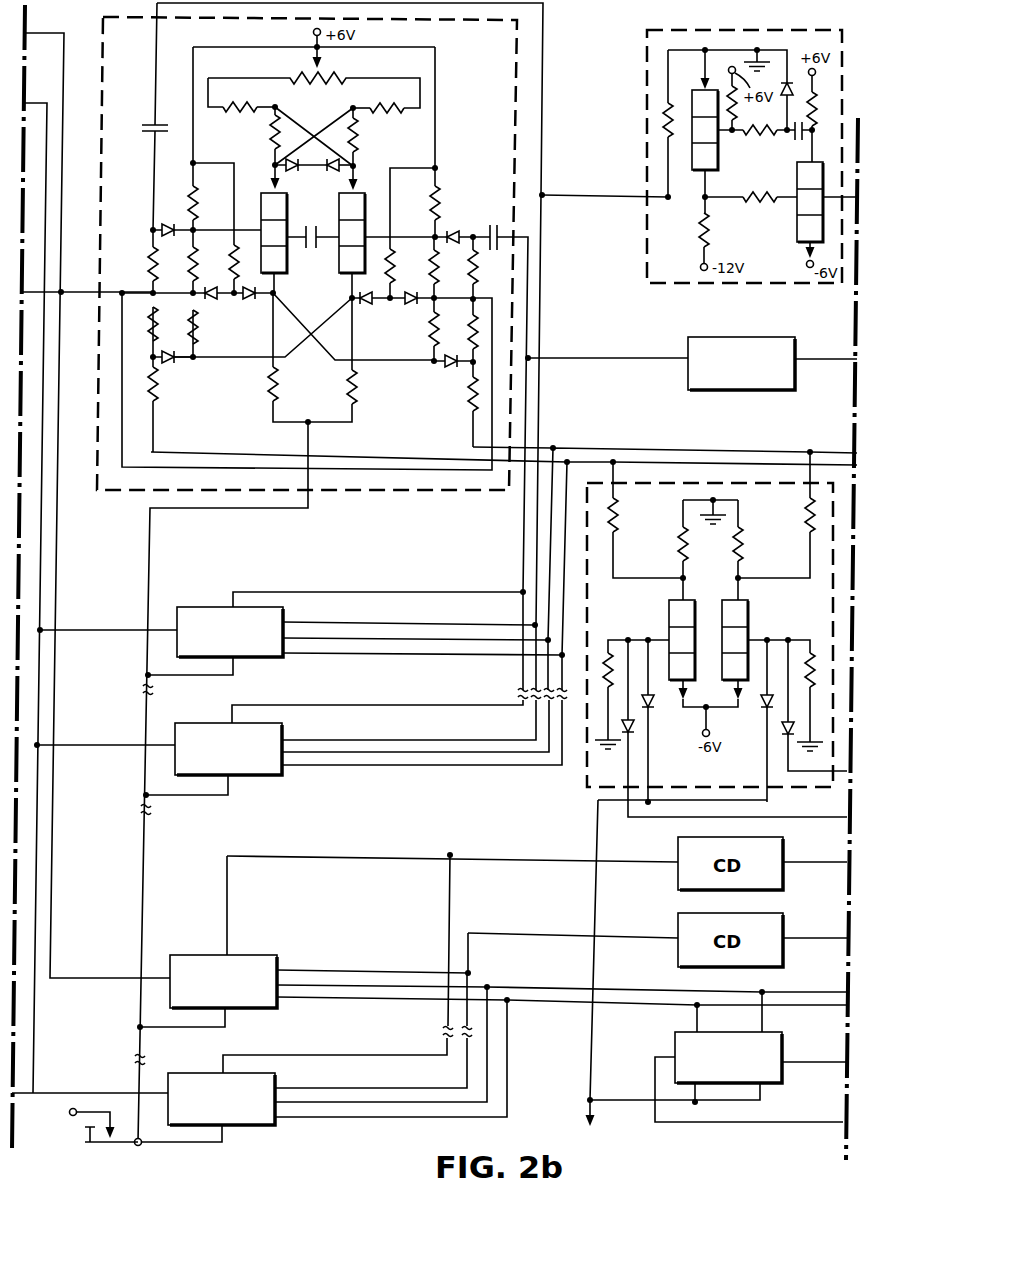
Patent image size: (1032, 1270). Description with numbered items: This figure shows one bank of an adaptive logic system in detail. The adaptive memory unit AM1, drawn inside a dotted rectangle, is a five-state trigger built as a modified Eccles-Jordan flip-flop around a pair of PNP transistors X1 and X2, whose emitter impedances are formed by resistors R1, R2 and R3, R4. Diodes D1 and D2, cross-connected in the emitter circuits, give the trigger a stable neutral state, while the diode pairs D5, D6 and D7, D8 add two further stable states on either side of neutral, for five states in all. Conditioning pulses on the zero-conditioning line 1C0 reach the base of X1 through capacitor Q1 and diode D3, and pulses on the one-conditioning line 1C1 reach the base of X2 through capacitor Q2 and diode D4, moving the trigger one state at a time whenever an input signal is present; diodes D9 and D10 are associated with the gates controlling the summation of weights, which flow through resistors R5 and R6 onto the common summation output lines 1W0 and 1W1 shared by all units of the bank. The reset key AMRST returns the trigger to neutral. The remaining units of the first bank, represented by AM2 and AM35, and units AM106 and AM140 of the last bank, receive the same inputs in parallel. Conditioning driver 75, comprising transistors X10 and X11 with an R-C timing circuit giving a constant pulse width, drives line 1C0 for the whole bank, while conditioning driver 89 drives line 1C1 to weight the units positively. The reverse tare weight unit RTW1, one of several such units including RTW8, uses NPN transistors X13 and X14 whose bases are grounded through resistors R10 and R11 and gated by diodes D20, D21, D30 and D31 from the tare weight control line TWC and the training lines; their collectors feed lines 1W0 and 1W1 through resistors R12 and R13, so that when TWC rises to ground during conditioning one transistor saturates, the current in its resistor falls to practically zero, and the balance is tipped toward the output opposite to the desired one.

The adaptive memory unit AM1 is at (499, 77).
The adaptive memory unit AM2 is at (230, 632).
The adaptive memory unit AM35 is at (228, 749).
The adaptive memory unit AM106 is at (223, 981).
The adaptive memory unit AM140 is at (221, 1099).
The reset key AMRST is at (115, 1143).
The capacitor Q1 is at (150, 132).
The capacitor Q2 is at (497, 222).
The resistor R1 is at (270, 146).
The resistor R2 is at (233, 112).
The resistor R3 is at (400, 113).
The resistor R4 is at (358, 140).
The resistor R5 is at (160, 402).
The resistor R6 is at (466, 401).
The resistor R10 is at (607, 650).
The resistor R11 is at (808, 650).
The resistor R12 is at (616, 521).
The resistor R13 is at (805, 526).
The diode D1 is at (301, 177).
The diode D2 is at (334, 177).
The diode D3 is at (172, 224).
The diode D4 is at (451, 231).
The diode D5 is at (209, 288).
The diode D6 is at (250, 302).
The diode D7 is at (370, 306).
The diode D8 is at (410, 306).
The diode D9 is at (172, 363).
The diode D10 is at (447, 368).
The diode D20 is at (652, 708).
The diode D21 is at (762, 706).
The diode D30 is at (635, 733).
The diode D31 is at (776, 736).
The PNP transistor X1 is at (287, 258).
The PNP transistor X2 is at (338, 270).
The transistor X10 is at (718, 154).
The transistor X11 is at (797, 211).
The NPN transistor X13 is at (668, 610).
The NPN transistor X14 is at (749, 615).
The conditioning line 1C0 is at (545, 63).
The conditioning line 1C1 is at (530, 245).
The summation output line 1W0 is at (715, 463).
The summation output line 1W1 is at (660, 448).
The conditioning driver 75 is at (640, 290).
The conditioning driver 89 is at (688, 340).
The reverse tare weight unit RTW1 is at (585, 796).
The reverse tare weight unit RTW8 is at (672, 1041).
The tare weight control line TWC is at (595, 890).